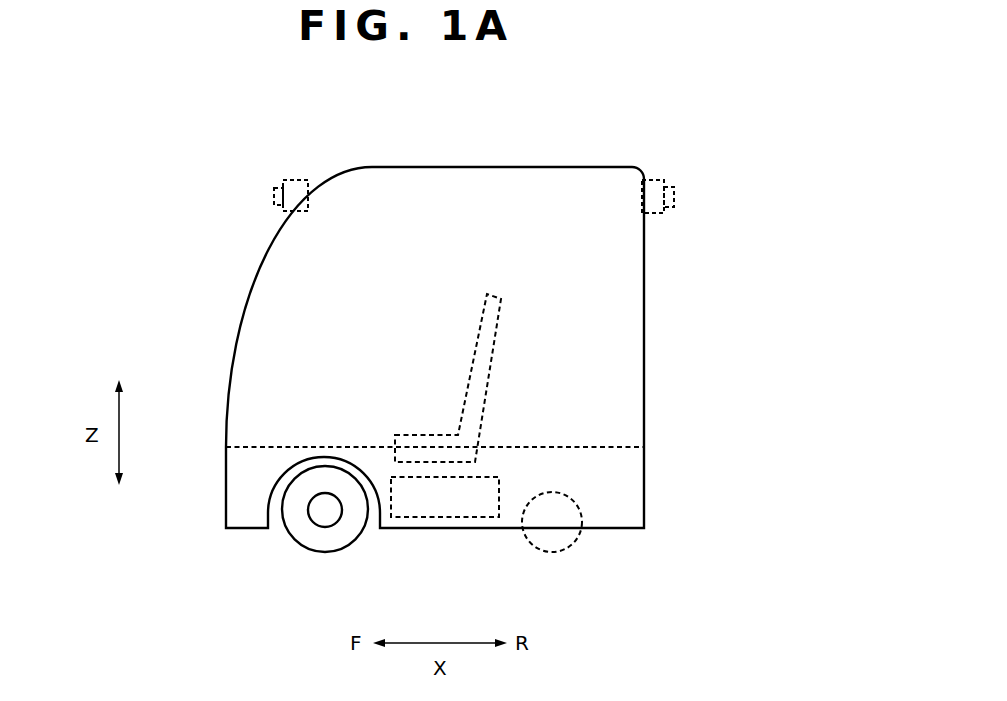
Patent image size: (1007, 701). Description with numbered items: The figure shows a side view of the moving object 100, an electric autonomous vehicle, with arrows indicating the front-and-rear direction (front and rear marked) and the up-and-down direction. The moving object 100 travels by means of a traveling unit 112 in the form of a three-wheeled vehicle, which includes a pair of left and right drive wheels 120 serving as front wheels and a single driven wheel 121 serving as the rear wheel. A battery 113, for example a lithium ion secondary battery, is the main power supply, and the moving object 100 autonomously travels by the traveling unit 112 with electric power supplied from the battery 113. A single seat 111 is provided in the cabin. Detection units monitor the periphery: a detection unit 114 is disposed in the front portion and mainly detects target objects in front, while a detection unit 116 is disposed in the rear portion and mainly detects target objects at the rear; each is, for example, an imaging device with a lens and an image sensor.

The moving object 100 is at (578, 134).
The seat 111 is at (498, 293).
The traveling unit 112 is at (644, 478).
The battery 113 is at (455, 519).
The detection unit 114 is at (295, 178).
The detection unit 116 is at (652, 178).
The drive wheel 120 is at (318, 552).
The driven wheel 121 is at (558, 553).